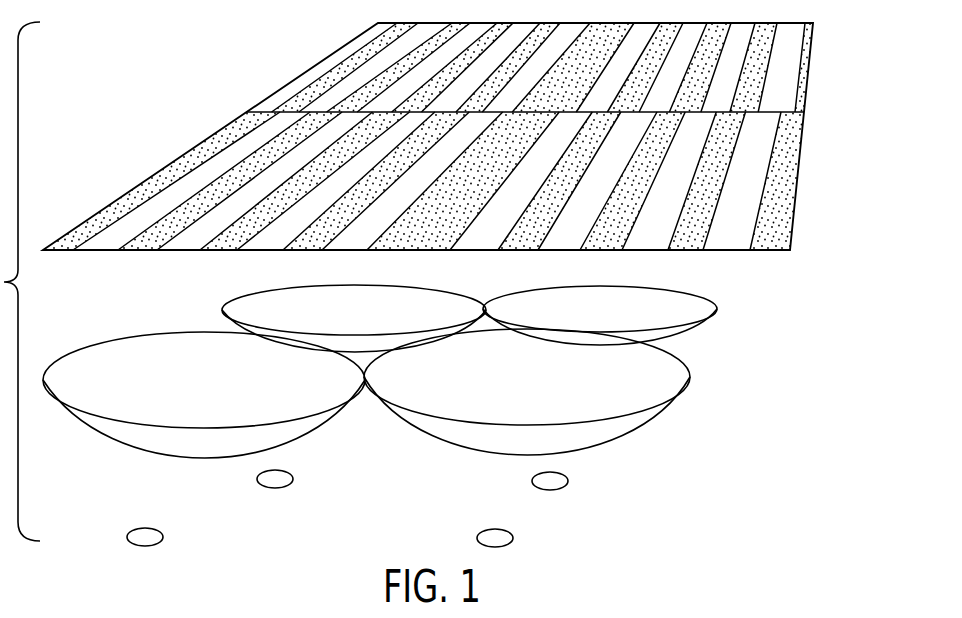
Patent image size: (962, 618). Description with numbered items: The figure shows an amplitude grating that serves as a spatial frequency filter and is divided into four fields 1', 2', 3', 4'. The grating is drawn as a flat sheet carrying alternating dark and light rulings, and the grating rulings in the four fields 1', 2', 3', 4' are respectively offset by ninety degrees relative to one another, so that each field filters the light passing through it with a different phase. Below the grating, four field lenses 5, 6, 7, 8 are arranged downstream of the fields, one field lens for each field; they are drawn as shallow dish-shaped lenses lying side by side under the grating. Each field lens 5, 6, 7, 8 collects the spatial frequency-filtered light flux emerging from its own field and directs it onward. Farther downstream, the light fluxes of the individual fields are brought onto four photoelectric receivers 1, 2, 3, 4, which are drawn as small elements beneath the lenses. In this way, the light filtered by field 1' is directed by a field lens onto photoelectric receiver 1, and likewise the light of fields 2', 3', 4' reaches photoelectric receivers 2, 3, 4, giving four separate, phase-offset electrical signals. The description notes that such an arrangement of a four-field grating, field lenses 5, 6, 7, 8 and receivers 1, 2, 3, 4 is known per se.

The photoelectric receiver 1 is at (164, 545).
The photoelectric receiver 2 is at (295, 488).
The photoelectric receiver 3 is at (516, 547).
The photoelectric receiver 4 is at (571, 490).
The field lens 5 is at (86, 363).
The field lens 6 is at (250, 307).
The field lens 7 is at (680, 385).
The field lens 8 is at (692, 300).
The field 1' is at (428, 136).
The field 2' is at (345, 57).
The field 3' is at (742, 207).
The field 4' is at (803, 67).